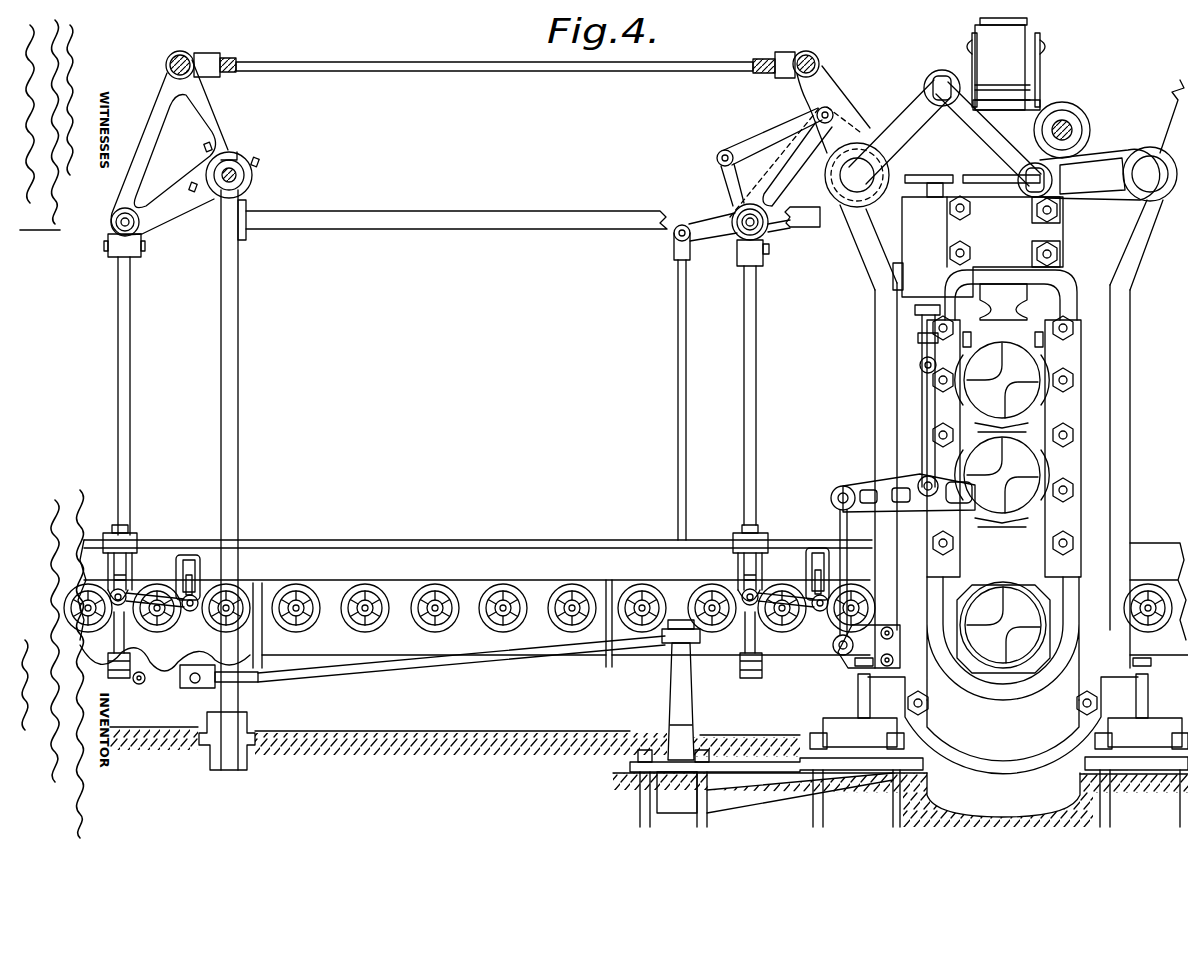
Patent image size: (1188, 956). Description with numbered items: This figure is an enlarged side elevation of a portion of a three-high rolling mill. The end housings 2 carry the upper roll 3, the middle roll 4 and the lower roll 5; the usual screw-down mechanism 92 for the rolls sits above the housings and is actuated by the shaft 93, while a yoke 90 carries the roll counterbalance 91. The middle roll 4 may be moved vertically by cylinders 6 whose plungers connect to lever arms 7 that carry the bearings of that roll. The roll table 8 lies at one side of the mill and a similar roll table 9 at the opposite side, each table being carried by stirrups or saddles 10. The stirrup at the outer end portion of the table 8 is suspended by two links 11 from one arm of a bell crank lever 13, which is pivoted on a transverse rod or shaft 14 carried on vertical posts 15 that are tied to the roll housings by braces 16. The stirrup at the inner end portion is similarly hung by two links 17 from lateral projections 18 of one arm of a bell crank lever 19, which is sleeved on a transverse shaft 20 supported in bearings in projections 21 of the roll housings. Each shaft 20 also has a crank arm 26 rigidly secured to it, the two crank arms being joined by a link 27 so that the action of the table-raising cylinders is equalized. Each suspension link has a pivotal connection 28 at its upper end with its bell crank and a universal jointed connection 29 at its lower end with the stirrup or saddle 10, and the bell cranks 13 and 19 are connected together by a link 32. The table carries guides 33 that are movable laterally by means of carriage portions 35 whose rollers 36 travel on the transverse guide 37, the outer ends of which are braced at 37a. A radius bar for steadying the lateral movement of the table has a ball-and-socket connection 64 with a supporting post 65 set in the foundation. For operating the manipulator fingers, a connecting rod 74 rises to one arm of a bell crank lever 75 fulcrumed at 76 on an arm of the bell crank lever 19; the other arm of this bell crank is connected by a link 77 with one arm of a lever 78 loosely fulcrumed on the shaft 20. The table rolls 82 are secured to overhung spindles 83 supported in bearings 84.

The end housings 2 is at (878, 415).
The upper roll 3 is at (1040, 380).
The middle roll 4 is at (1040, 474).
The lower roll 5 is at (1010, 585).
The cylinders 6 is at (912, 233).
The lever arms 7 is at (872, 488).
The roll table 8 is at (475, 593).
The roll table 9 is at (1146, 548).
The stirrups or saddles 10 is at (116, 642).
The links 11 is at (118, 380).
The bell crank lever 13 is at (155, 128).
The transverse rod or shaft 14 is at (244, 178).
The vertical posts 15 is at (238, 380).
The braces 16 is at (478, 223).
The links 17 is at (756, 395).
The lateral projections 18 is at (732, 214).
The bell crank lever 19 is at (806, 96).
The transverse shaft 20 is at (1001, 175).
The projections 21 is at (866, 245).
The crank arm 26 is at (908, 102).
The link 27 is at (1000, 150).
The pivotal connection 28 is at (110, 222).
The universal jointed connection 29 is at (118, 552).
The link 32 is at (423, 62).
The guides 33 is at (500, 562).
The carriage portions 35 is at (191, 555).
The rollers 36 is at (185, 585).
The transverse guide 37 is at (190, 612).
The bracing 37a is at (165, 622).
The ball-and-socket connection 64 is at (666, 650).
The supporting post 65 is at (672, 700).
The connecting rod 74 is at (678, 395).
The bell crank lever 75 is at (717, 172).
The fulcrum 76 is at (745, 242).
The link 77 is at (770, 140).
The lever 78 is at (822, 130).
The table roll 82 is at (352, 616).
The overhung spindle 83 is at (420, 616).
The bearings 84 is at (488, 616).
The yoke 90 is at (1028, 45).
The roll counterbalance 91 is at (972, 64).
The screw-down mechanism 92 is at (1032, 85).
The shaft 93 is at (1075, 135).